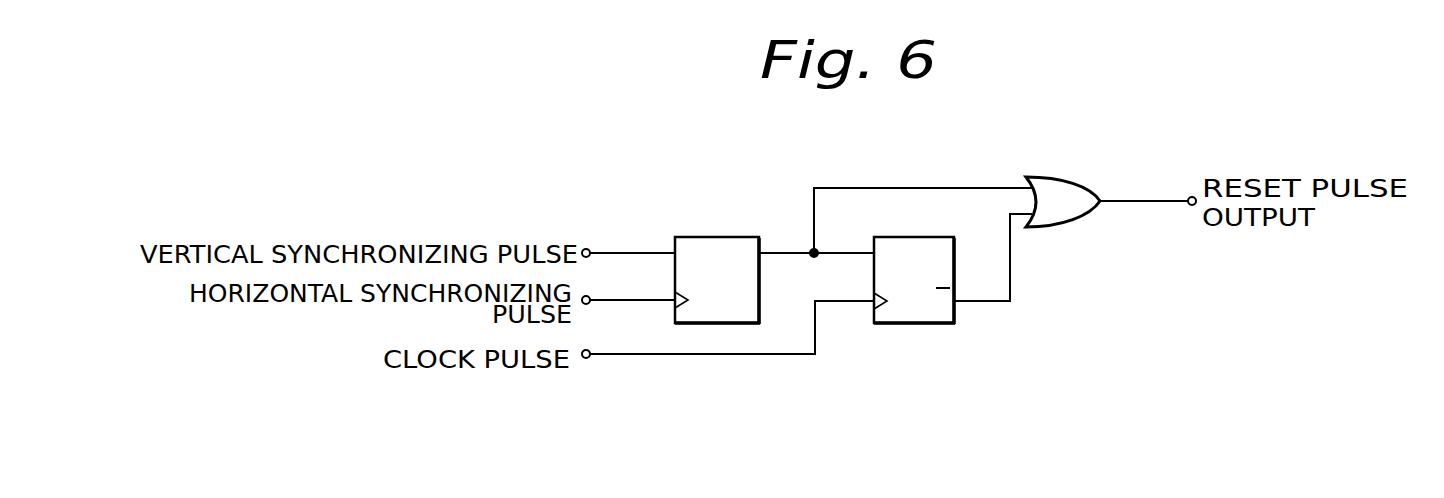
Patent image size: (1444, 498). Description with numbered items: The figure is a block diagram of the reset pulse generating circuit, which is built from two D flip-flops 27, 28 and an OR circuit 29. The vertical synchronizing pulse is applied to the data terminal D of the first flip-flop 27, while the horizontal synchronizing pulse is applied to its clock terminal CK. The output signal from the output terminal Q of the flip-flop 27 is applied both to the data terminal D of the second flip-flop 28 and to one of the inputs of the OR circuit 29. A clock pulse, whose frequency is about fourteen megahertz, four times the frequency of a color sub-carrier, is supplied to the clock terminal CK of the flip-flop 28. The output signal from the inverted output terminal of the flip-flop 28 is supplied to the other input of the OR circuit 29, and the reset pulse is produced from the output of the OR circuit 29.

The D flip-flop 27 is at (718, 237).
The D flip-flop 28 is at (915, 324).
The OR circuit 29 is at (1068, 175).